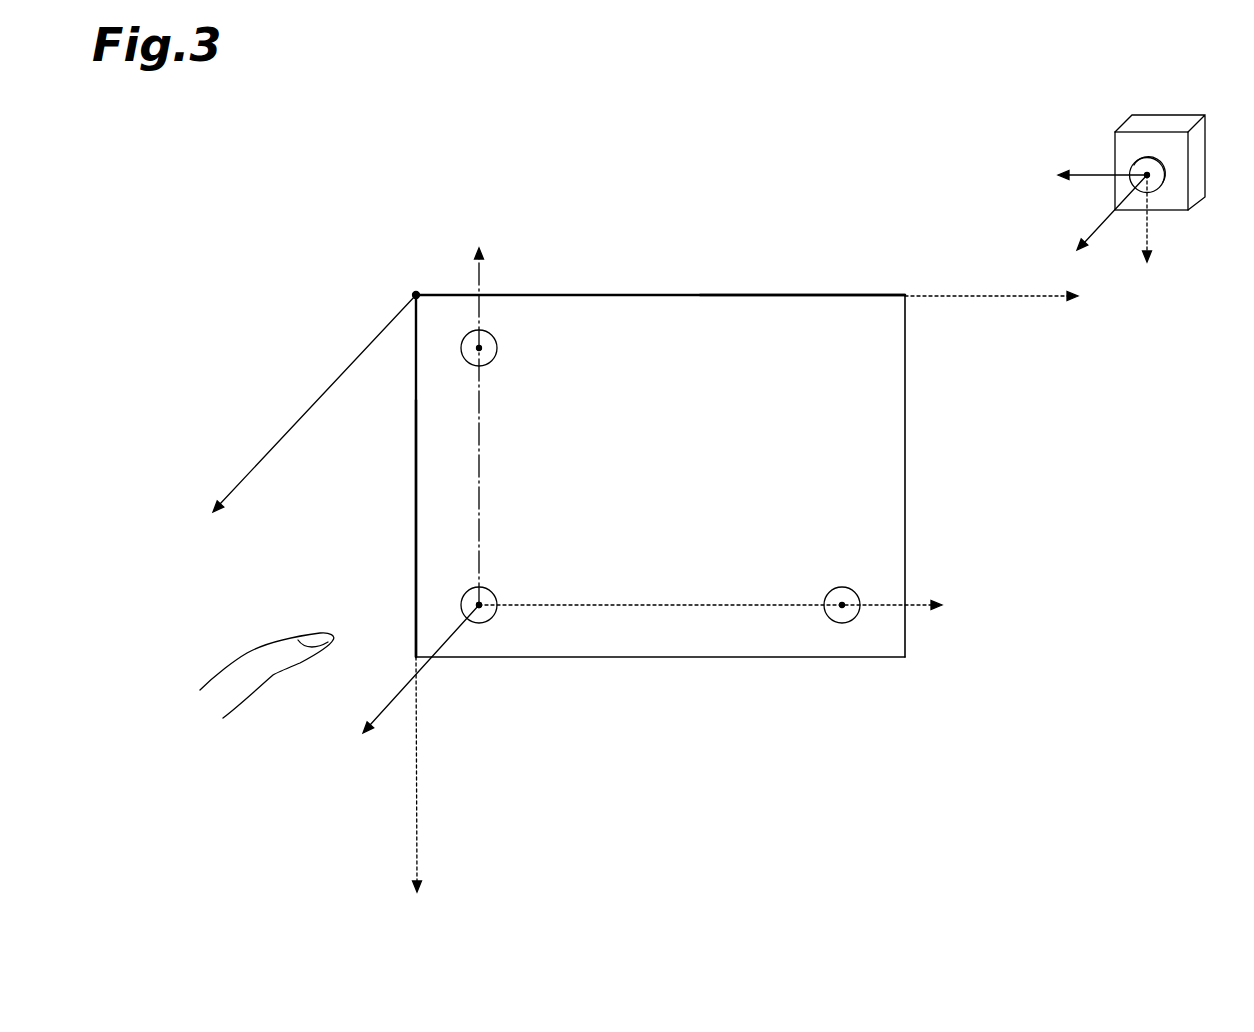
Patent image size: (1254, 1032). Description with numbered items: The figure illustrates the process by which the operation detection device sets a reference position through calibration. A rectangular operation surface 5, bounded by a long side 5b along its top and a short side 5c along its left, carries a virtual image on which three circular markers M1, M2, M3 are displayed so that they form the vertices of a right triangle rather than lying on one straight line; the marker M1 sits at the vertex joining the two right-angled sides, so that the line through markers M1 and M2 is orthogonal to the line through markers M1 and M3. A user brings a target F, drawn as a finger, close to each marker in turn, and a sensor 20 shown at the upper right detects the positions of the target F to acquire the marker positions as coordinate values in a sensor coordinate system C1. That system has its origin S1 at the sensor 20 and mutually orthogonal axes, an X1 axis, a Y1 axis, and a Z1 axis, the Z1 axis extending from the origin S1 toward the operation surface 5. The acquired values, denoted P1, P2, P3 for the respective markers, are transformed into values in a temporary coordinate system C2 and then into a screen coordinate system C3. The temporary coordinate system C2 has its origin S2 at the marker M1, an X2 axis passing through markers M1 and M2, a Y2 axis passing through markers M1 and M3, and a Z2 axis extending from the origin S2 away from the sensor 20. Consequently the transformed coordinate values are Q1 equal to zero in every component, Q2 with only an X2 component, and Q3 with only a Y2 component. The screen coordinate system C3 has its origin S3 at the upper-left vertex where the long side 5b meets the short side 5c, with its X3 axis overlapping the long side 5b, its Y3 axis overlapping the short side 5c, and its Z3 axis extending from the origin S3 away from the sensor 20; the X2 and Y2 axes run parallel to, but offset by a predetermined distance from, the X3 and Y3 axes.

The operation surface 5 is at (865, 452).
The long side 5b is at (790, 292).
The short side 5c is at (412, 476).
The sensor 20 is at (1163, 113).
The sensor coordinate system C1 is at (1094, 150).
The X1-axis X1 is at (1084, 176).
The Y1-axis Y1 is at (1148, 238).
The Z1-axis Z1 is at (1096, 221).
The origin of sensor coordinate system S1 is at (1152, 181).
The temporary coordinate system C2 is at (521, 626).
The X2-axis X2 is at (730, 606).
The Y2-axis Y2 is at (480, 412).
The Z2-axis Z2 is at (413, 685).
The origin of temporary coordinate system S2 is at (466, 600).
The screen coordinate system C3 is at (399, 262).
The X3-axis X3 is at (1011, 296).
The Y3-axis Y3 is at (416, 791).
The Z3-axis Z3 is at (305, 423).
The origin of screen coordinate system S3 is at (412, 295).
The marker M1 is at (490, 622).
The marker M2 is at (852, 618).
The marker M3 is at (497, 362).
The coordinate value P1 is at (479, 612).
The coordinate value P2 is at (842, 620).
The coordinate value P3 is at (484, 350).
The coordinate value Q1 is at (468, 625).
The coordinate value Q2 is at (838, 612).
The coordinate value Q3 is at (483, 345).
The target F is at (245, 653).